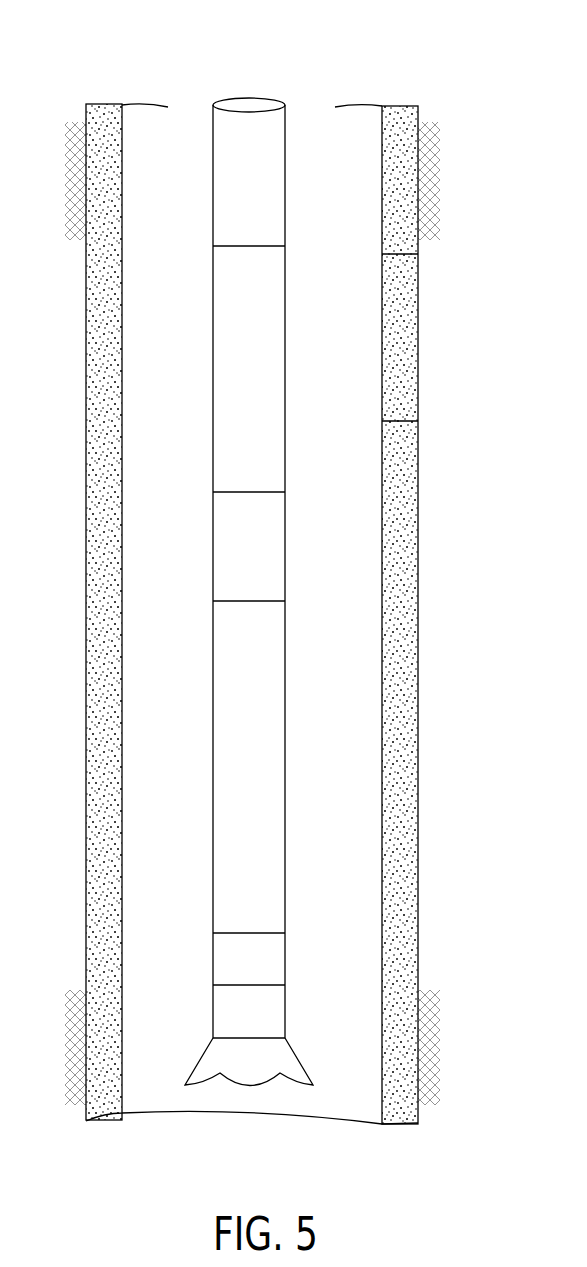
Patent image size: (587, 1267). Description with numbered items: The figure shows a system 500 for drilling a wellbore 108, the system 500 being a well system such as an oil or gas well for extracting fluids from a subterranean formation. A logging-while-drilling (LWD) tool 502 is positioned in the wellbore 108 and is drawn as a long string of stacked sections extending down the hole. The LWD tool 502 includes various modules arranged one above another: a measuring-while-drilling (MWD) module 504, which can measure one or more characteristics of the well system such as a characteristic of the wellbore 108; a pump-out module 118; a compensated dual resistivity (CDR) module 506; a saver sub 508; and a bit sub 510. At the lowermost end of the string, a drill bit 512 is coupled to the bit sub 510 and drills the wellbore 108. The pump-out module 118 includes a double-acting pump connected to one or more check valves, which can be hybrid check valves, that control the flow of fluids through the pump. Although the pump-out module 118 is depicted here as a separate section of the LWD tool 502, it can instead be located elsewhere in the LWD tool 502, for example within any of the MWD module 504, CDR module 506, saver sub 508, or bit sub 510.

The system 500 is at (326, 66).
The wellbore 108 is at (378, 521).
The LWD tool 502 is at (273, 202).
The MWD module 504 is at (273, 333).
The pump-out module 118 is at (273, 538).
The CDR module 506 is at (273, 660).
The saver sub 508 is at (272, 951).
The bit sub 510 is at (272, 1005).
The drill bit 512 is at (270, 1087).